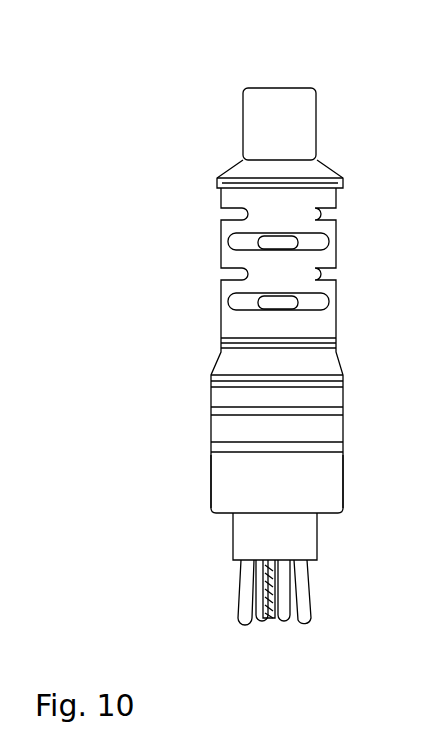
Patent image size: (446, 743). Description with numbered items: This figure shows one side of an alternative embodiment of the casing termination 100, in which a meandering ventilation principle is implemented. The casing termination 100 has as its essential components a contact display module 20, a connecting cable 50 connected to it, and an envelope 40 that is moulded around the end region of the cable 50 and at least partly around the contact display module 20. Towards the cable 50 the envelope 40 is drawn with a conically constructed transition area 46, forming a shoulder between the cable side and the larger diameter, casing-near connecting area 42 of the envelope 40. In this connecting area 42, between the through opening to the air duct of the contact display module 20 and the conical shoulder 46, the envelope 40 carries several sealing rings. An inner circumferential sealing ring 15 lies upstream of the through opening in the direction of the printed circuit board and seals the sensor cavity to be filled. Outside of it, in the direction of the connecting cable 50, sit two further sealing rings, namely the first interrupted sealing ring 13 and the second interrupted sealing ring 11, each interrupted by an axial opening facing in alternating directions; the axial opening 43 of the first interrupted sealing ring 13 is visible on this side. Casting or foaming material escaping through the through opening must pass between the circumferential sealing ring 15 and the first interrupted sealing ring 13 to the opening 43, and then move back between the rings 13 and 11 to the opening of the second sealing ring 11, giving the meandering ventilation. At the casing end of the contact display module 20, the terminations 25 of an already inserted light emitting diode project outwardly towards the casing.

The casing termination 100 is at (178, 98).
The connecting cable 50 is at (288, 128).
The envelope 40 is at (235, 328).
The transition area 46 is at (328, 366).
The second interrupted sealing ring 11 is at (312, 391).
The first interrupted sealing ring 13 is at (273, 407).
The axial opening 43 is at (273, 407).
The circumferential sealing ring 15 is at (218, 450).
The connecting area 42 is at (235, 494).
The contact display module 20 is at (305, 538).
The terminations 25 is at (272, 597).